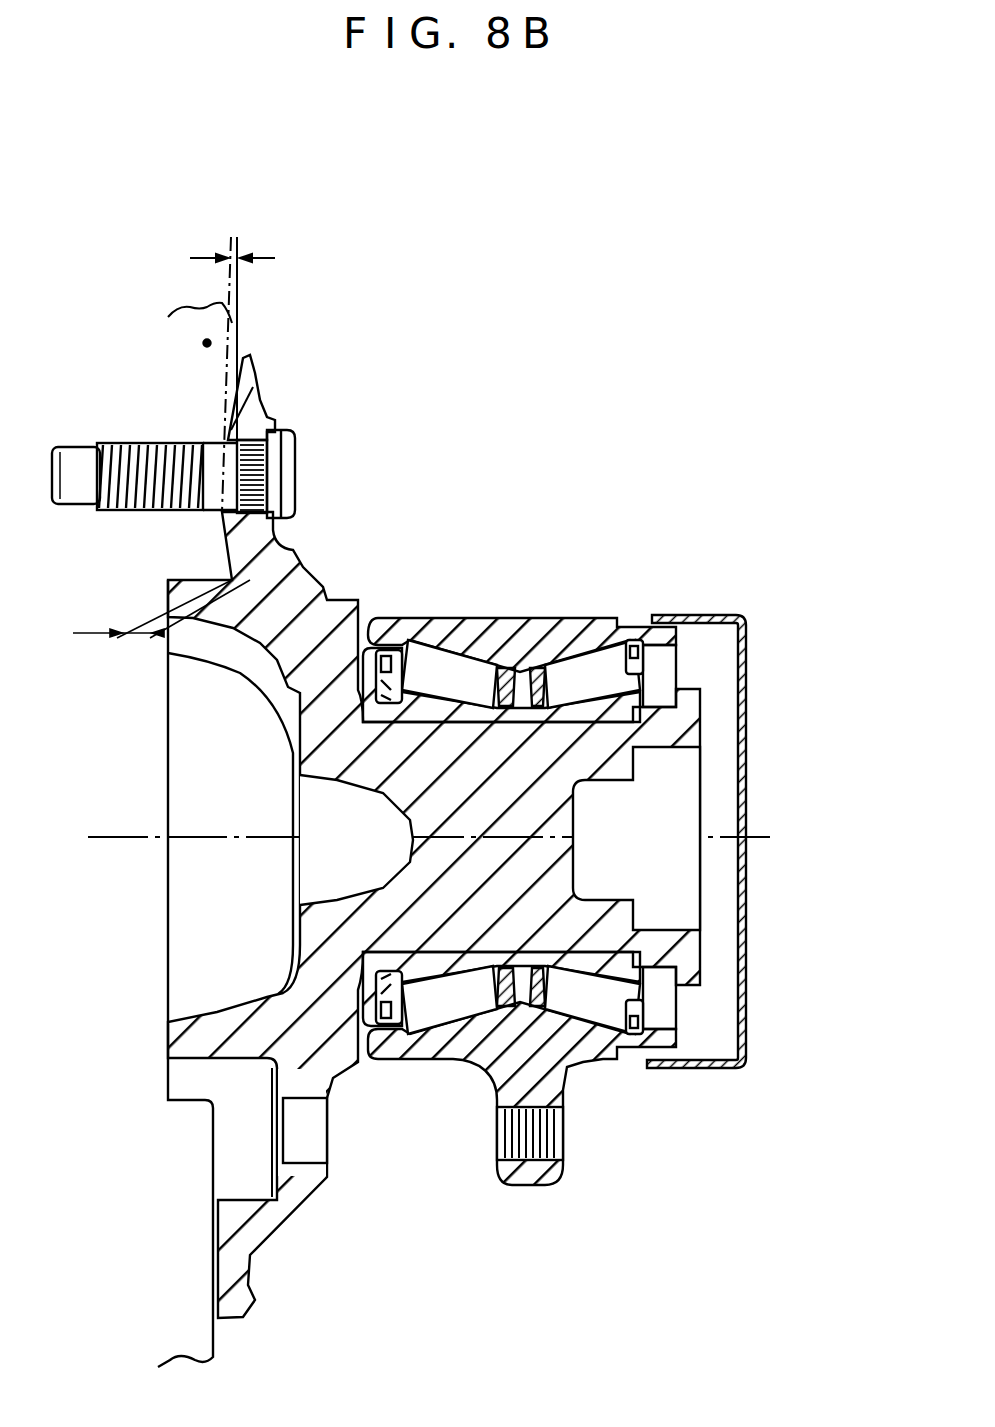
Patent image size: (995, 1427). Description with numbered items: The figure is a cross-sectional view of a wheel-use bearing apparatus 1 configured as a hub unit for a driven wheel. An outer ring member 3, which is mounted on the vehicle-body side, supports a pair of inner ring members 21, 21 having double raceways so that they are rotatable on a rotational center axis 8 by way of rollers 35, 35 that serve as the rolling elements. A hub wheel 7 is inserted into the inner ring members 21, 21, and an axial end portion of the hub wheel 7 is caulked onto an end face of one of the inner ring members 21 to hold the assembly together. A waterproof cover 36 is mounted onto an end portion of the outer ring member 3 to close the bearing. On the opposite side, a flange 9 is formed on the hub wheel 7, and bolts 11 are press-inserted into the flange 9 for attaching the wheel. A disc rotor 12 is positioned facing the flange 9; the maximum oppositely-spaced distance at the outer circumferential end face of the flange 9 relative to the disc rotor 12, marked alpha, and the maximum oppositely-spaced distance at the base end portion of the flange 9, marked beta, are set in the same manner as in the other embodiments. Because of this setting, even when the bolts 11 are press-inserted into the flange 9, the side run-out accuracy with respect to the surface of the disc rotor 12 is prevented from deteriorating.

The wheel-use bearing apparatus 1 is at (432, 483).
The outer ring member 3 is at (538, 668).
The hub wheel 7 is at (543, 905).
The rotational center axis 8 is at (135, 835).
The flange 9 is at (250, 390).
The bolts 11 is at (290, 476).
The disc rotor 12 is at (207, 343).
The inner ring members 21 is at (373, 692).
The rollers 35 is at (570, 672).
The waterproof cover 36 is at (747, 778).